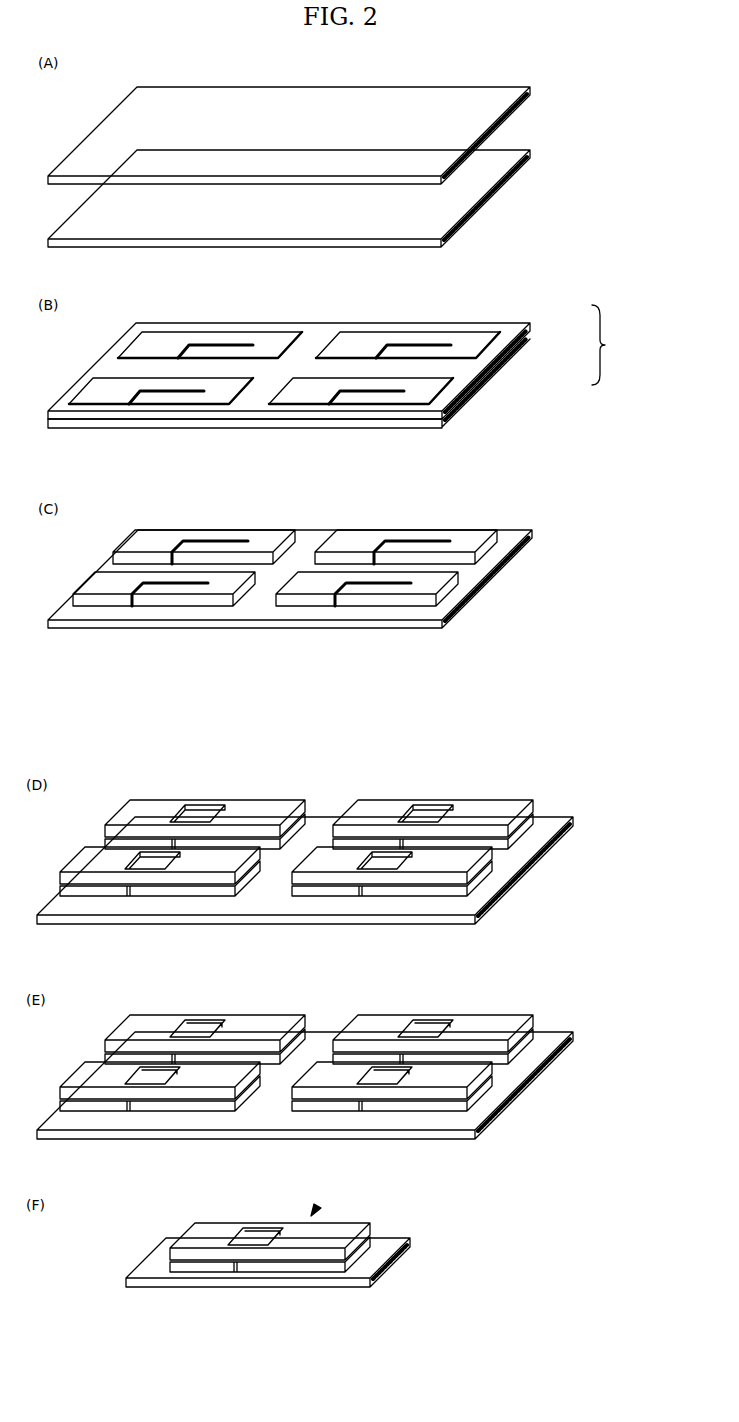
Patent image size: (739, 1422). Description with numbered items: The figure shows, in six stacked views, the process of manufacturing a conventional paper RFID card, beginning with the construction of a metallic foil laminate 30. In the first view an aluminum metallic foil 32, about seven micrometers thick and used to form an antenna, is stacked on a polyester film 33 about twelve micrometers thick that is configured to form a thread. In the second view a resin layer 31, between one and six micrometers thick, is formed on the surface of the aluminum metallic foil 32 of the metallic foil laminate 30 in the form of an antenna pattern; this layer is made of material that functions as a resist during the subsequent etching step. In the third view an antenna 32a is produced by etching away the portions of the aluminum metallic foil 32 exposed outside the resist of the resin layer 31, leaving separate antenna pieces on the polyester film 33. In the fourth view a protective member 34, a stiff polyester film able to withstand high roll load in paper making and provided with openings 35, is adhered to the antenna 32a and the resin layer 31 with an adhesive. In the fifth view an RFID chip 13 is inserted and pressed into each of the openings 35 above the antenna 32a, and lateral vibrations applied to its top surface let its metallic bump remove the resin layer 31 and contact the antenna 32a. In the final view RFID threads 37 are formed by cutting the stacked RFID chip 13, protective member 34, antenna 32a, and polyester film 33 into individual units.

The RFID chip 13 is at (428, 1025).
The metallic foil laminate 30 is at (344, 366).
The resin layer 31 is at (362, 348).
The aluminum metallic foil 32 is at (520, 108).
The antenna 32a is at (497, 530).
The polyester film 33 is at (510, 185).
The protective member 34 is at (370, 810).
The openings 35 is at (197, 813).
The RFID thread 37 is at (317, 1206).